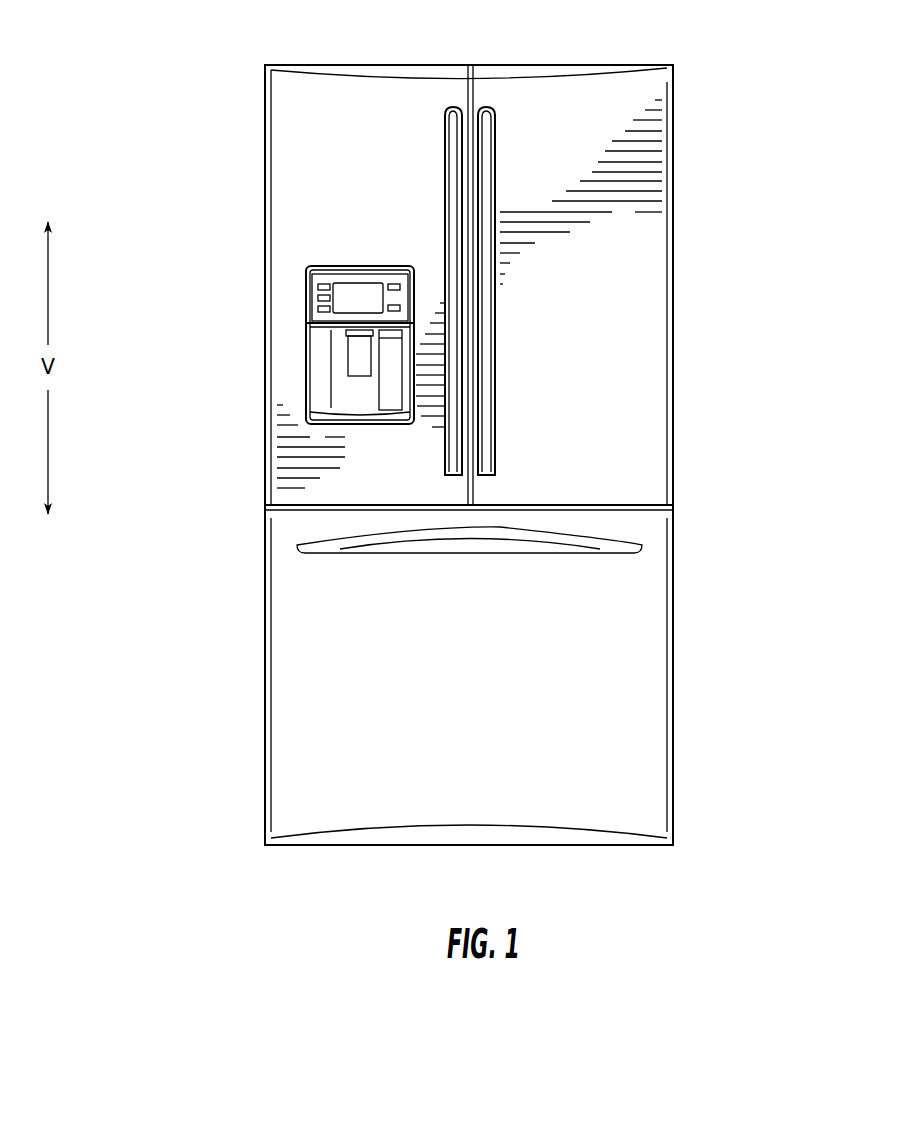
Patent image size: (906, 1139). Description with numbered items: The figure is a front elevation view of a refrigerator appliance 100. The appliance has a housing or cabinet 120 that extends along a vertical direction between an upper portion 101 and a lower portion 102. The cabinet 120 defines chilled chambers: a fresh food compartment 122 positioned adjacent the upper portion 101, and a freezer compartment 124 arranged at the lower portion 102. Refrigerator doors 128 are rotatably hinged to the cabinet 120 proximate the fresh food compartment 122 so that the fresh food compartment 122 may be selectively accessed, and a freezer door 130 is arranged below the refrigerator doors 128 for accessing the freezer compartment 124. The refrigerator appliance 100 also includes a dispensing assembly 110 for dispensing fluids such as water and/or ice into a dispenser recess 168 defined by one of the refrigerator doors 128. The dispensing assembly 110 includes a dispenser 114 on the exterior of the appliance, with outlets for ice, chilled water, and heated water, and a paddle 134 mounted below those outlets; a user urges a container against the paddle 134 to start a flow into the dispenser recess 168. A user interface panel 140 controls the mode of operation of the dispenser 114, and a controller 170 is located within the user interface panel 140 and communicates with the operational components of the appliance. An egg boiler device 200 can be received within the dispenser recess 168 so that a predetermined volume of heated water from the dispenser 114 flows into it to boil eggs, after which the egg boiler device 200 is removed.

The refrigerator appliance 100 is at (182, 95).
The upper portion 101 is at (684, 72).
The lower portion 102 is at (684, 828).
The dispensing assembly 110 is at (303, 312).
The dispenser 114 is at (340, 332).
The cabinet 120 is at (676, 507).
The fresh food compartment 122 is at (618, 308).
The freezer compartment 124 is at (617, 645).
The refrigerator doors 128 is at (307, 140).
The freezer door 130 is at (335, 660).
The paddle 134 is at (359, 366).
The user interface panel 140 is at (378, 280).
The dispenser recess 168 is at (332, 377).
The controller 170 is at (340, 282).
The egg boiler device 200 is at (383, 412).